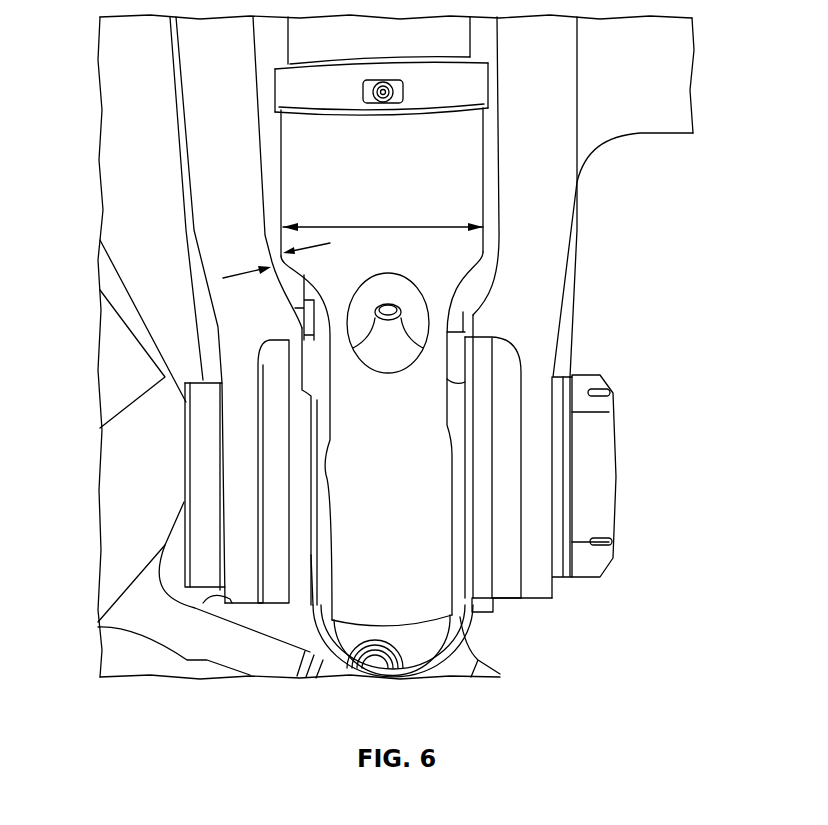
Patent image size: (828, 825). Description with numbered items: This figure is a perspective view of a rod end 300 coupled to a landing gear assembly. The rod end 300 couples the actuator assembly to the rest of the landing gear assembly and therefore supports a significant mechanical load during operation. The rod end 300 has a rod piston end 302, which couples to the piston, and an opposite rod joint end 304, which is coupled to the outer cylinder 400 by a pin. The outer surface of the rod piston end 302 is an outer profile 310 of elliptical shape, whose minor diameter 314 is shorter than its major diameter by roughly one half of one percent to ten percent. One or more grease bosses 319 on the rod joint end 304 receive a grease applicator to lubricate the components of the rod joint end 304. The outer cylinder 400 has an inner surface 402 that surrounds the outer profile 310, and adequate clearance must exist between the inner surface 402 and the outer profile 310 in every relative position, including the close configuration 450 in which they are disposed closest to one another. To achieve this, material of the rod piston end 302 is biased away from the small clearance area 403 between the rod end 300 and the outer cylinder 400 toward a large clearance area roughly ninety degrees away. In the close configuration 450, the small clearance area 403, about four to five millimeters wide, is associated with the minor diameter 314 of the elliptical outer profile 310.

The rod end 300 is at (522, 160).
The rod piston end 302 is at (498, 200).
The rod joint end 304 is at (430, 578).
The outer profile 310 is at (280, 158).
The minor diameter 314 is at (383, 225).
The grease bosses 319 is at (401, 316).
The outer cylinder 400 is at (218, 175).
The inner surface 402 is at (255, 230).
The small clearance area 403 is at (282, 262).
The close configuration 450 is at (590, 291).